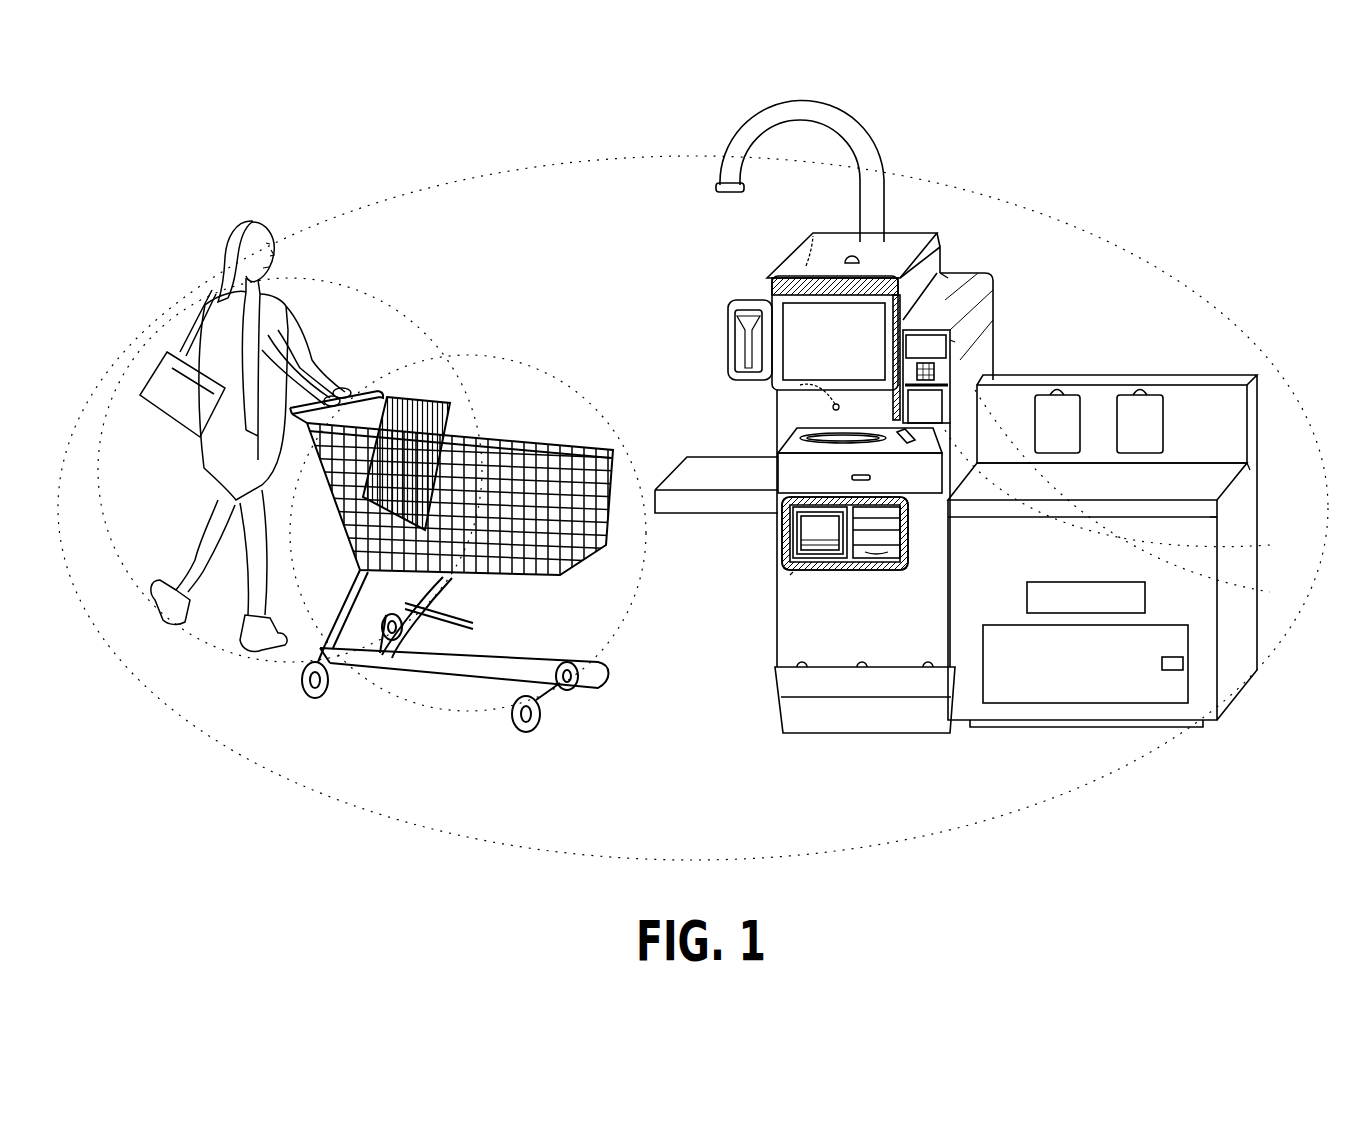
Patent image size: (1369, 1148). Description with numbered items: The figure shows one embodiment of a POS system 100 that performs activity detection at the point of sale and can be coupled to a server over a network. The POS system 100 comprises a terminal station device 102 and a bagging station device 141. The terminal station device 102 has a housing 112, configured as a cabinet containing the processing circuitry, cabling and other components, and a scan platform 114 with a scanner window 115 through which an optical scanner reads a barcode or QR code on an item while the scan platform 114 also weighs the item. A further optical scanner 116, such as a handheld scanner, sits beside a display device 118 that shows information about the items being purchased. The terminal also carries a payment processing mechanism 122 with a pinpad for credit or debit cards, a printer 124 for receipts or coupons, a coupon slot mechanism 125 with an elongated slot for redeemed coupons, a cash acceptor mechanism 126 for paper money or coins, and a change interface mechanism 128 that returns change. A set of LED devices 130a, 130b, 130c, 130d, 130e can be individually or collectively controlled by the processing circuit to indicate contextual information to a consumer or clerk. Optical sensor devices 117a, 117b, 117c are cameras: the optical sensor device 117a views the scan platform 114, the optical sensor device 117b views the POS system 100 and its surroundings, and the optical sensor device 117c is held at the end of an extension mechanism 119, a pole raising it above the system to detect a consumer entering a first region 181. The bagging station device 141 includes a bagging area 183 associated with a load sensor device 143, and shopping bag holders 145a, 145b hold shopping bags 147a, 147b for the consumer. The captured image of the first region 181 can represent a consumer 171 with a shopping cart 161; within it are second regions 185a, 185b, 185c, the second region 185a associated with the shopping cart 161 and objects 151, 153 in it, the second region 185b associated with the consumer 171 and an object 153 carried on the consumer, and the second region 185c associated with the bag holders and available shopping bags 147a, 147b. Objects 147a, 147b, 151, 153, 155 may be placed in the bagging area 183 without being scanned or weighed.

The POS system 100 is at (1134, 78).
The terminal station device 102 is at (938, 252).
The housing 112 is at (880, 644).
The scan platform 114 is at (800, 453).
The scanner window 115 is at (818, 438).
The optical scanner 116 is at (730, 346).
The optical sensor device 117a is at (786, 381).
The optical sensor device 117b is at (713, 187).
The optical sensor device 117c is at (858, 256).
The display device 118 is at (830, 335).
The extension mechanism 119 is at (857, 112).
The payment processing mechanism 122 is at (990, 306).
The printer 124 is at (955, 361).
The coupon slot mechanism 125 is at (1220, 545).
The cash acceptor mechanism 126 is at (790, 538).
The change interface mechanism 128 is at (1148, 598).
The LED device 130a is at (806, 266).
The LED device 130b is at (948, 276).
The LED device 130c is at (953, 343).
The LED device 130d is at (1220, 517).
The LED device 130e is at (790, 574).
The bagging station device 141 is at (1209, 240).
The load sensor device 143 is at (1232, 468).
The shopping bag holder 145a is at (1075, 312).
The shopping bag holder 145b is at (1230, 350).
The shopping bag 147a is at (1063, 396).
The shopping bag 147b is at (1158, 392).
The object 151 is at (370, 388).
The object 153 is at (162, 368).
The object 155 is at (518, 576).
The shopping cart 161 is at (521, 432).
The consumer 171 is at (265, 218).
The first region 181 is at (238, 753).
The bagging area 183 is at (1250, 470).
The second region 185a is at (425, 718).
The second region 185b is at (290, 470).
The second region 185c is at (1128, 491).